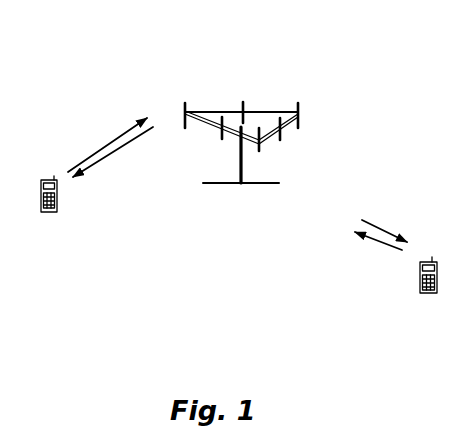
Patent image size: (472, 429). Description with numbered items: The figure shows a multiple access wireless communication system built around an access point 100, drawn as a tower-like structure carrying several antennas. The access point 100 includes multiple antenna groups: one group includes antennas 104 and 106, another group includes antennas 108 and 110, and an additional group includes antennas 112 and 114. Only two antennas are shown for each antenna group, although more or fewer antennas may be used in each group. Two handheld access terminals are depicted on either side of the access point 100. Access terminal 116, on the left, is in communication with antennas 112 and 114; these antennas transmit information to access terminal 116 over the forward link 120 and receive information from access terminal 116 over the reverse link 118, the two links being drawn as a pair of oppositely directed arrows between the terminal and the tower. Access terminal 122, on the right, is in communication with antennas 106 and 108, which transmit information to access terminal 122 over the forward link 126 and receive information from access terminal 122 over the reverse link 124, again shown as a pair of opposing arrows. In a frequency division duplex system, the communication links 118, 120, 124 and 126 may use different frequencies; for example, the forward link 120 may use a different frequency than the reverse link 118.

The access point 100 is at (230, 183).
The antenna 104 is at (259, 149).
The antenna 106 is at (280, 139).
The antenna 108 is at (303, 120).
The antenna 110 is at (187, 110).
The antenna 112 is at (187, 110).
The antenna 114 is at (223, 139).
The access terminal 116 is at (47, 177).
The reverse link 118 is at (107, 143).
The forward link 120 is at (118, 155).
The access terminal 122 is at (430, 257).
The reverse link 124 is at (373, 245).
The forward link 126 is at (387, 233).